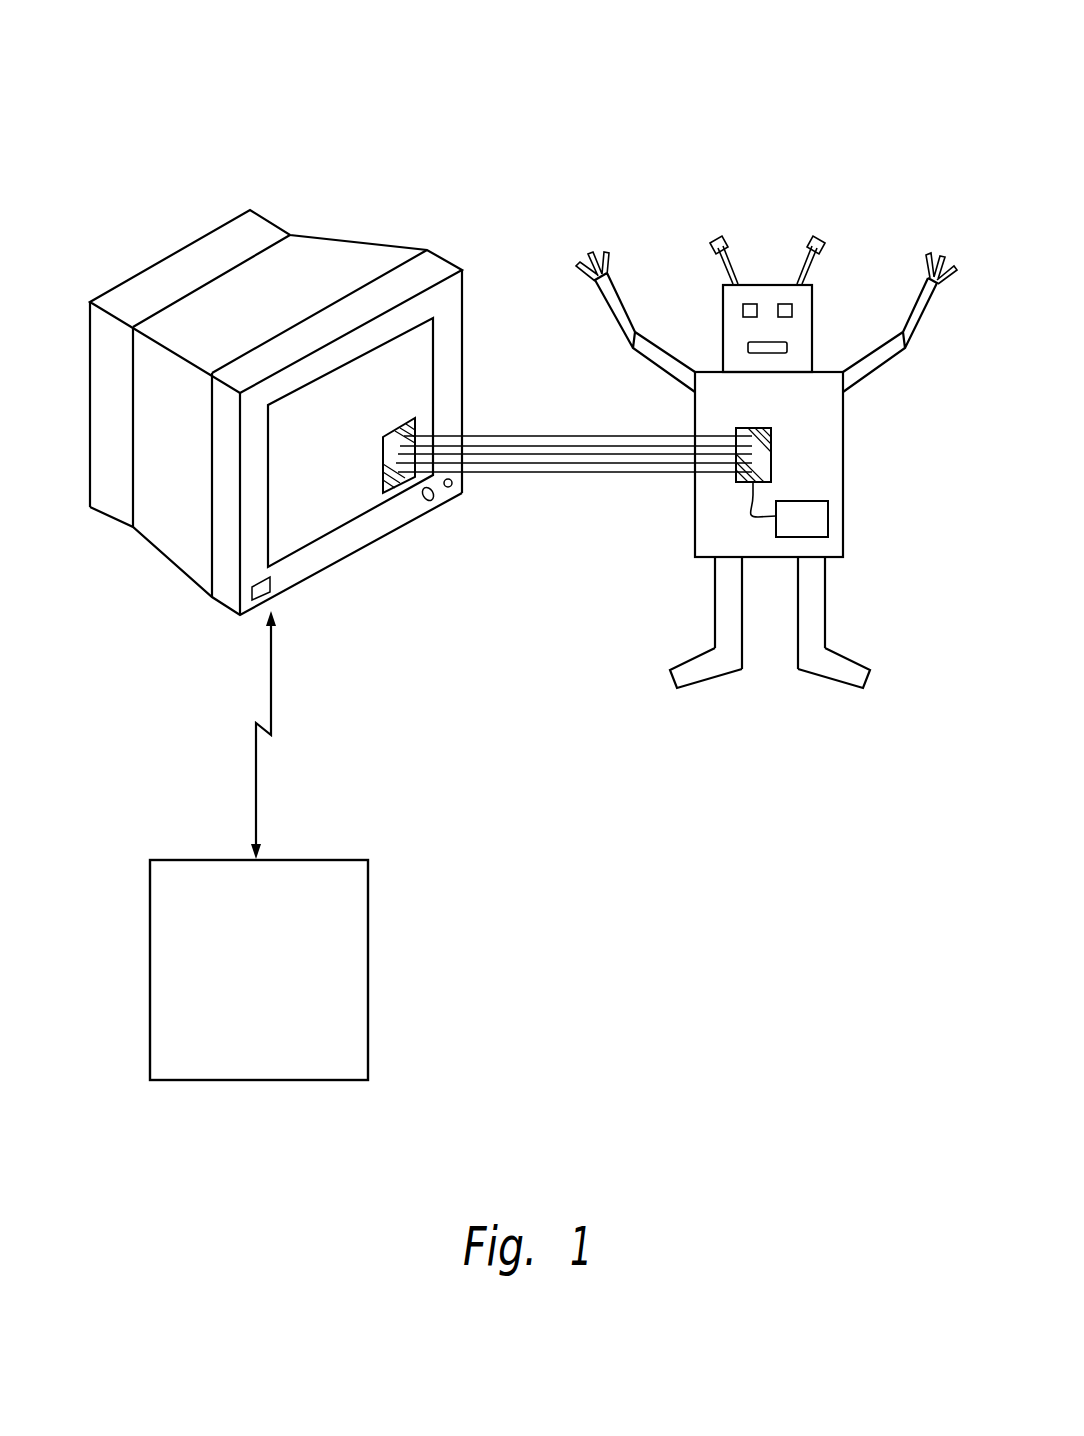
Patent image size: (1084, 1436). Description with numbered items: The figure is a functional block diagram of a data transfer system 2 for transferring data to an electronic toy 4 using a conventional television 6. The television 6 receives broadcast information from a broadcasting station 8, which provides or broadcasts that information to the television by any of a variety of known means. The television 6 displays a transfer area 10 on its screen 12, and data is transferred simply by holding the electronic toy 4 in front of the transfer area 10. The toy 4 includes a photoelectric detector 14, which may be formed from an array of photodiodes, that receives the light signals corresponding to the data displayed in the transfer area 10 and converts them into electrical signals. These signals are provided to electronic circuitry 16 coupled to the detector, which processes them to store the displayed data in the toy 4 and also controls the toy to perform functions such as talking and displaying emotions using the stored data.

The data transfer system 2 is at (192, 97).
The electronic toy 4 is at (766, 430).
The television 6 is at (276, 392).
The broadcasting station 8 is at (368, 1023).
The transfer area 10 is at (400, 488).
The screen 12 is at (307, 510).
The photoelectric detector 14 is at (771, 450).
The electronic circuitry 16 is at (815, 531).